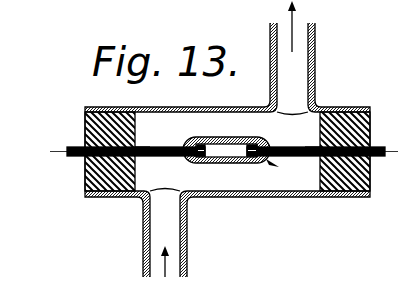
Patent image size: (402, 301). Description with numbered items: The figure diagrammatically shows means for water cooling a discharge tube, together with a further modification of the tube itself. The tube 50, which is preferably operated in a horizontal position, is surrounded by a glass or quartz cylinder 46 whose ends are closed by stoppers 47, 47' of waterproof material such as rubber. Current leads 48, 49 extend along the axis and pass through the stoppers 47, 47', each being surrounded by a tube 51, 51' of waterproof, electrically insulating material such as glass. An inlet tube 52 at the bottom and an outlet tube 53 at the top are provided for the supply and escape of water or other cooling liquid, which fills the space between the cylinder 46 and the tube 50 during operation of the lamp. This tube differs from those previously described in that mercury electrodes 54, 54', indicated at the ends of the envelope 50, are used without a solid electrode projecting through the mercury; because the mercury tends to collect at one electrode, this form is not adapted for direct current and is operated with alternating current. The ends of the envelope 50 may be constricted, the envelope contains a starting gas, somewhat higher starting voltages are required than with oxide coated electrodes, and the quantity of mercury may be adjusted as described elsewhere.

The glass or quartz cylinder 46 is at (192, 108).
The stopper 47 is at (110, 135).
The stopper 47' is at (347, 135).
The current lead 48 is at (53, 150).
The current lead 49 is at (393, 148).
The tube 50 is at (226, 138).
The tube of waterproof electrically insulating material 51 is at (147, 114).
The tube of waterproof electrically insulating material 51' is at (325, 114).
The inlet tube 52 is at (187, 245).
The outlet tube 53 is at (270, 45).
The mercury electrode 54 is at (208, 183).
The mercury electrode 54' is at (264, 183).